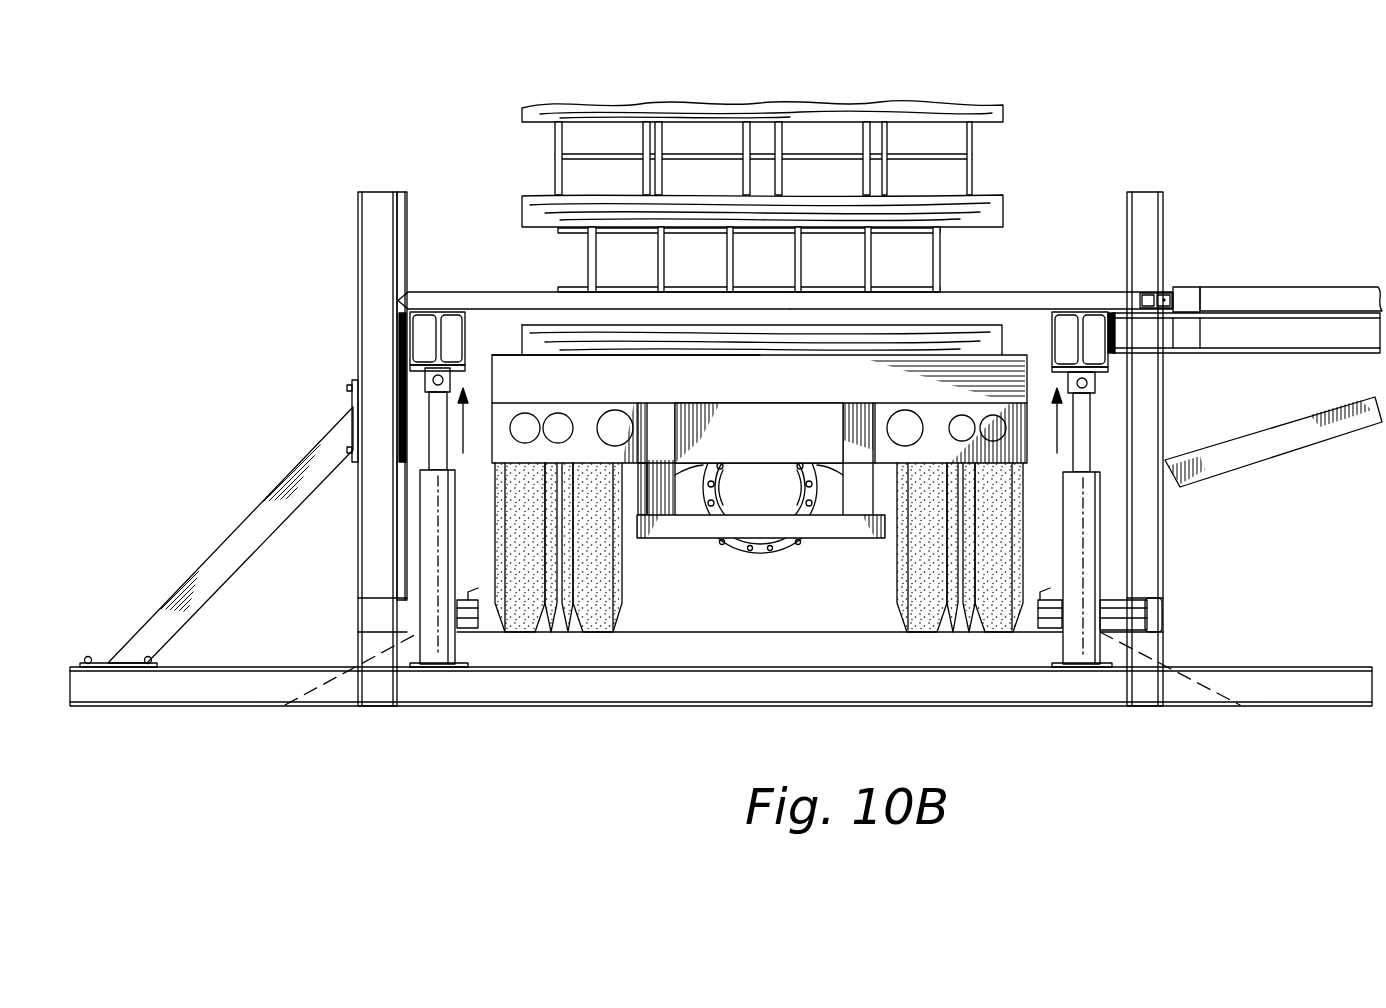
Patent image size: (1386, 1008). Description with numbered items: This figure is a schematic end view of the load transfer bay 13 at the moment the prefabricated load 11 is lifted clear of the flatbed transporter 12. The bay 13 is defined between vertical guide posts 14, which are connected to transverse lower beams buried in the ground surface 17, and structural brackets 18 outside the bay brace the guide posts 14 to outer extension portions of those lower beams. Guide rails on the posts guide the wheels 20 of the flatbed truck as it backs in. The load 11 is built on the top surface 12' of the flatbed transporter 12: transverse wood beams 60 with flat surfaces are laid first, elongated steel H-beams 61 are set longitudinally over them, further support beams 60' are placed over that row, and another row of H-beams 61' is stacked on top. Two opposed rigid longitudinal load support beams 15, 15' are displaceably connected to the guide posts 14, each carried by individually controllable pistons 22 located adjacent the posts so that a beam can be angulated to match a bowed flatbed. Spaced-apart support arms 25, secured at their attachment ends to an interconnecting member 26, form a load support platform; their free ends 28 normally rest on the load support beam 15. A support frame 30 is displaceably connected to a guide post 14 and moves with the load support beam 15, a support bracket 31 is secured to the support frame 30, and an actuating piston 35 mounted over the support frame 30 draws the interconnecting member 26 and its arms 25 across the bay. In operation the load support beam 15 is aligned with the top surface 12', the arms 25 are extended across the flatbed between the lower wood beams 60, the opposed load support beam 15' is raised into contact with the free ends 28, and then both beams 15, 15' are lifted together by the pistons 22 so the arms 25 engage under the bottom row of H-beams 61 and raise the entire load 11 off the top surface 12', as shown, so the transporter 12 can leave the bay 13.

The prefabricated load 11 is at (658, 147).
The flatbed transporter 12 is at (759, 454).
The top surface of the flatbed transporter 12' is at (626, 368).
The load transfer bay 13 is at (712, 585).
The guide post 14 is at (377, 207).
The load support beam 15 is at (1132, 359).
The load support beam 15' is at (365, 367).
The ground surface 17 is at (793, 628).
The structural bracket 18 is at (243, 540).
The wheels 20 is at (528, 603).
The piston 22 is at (437, 568).
The support arm 25 is at (1047, 302).
The interconnecting member 26 is at (1185, 298).
The free end of support arm 28 is at (448, 302).
The support frame 30 is at (1228, 353).
The support bracket 31 is at (1225, 455).
The actuating piston 35 is at (1322, 302).
The wood beam 60 is at (732, 298).
The further support beam 60' is at (732, 182).
The steel H-beam 61 is at (810, 243).
The H-beam of further row 61' is at (811, 139).